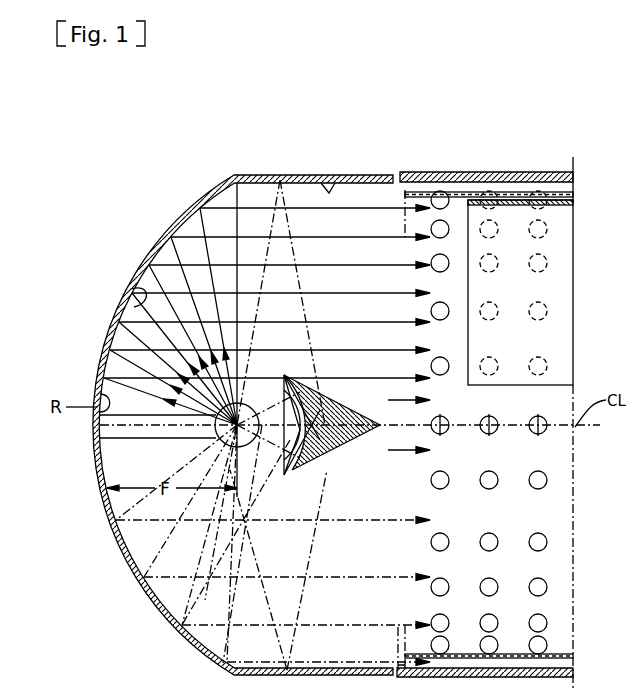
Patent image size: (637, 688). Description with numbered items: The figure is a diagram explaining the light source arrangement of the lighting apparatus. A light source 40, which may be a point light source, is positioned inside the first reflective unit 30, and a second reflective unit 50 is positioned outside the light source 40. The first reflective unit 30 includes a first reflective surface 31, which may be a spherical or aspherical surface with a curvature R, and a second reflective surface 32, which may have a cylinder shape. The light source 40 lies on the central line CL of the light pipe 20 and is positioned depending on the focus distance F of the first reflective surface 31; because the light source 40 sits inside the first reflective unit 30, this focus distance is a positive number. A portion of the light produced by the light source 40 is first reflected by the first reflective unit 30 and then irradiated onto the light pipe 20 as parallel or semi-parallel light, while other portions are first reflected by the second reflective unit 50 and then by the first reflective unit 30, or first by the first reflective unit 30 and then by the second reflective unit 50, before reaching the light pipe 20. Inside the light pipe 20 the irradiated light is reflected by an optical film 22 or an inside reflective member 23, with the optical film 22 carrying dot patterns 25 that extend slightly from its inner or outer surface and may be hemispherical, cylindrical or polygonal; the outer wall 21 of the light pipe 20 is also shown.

The light pipe 20 is at (582, 101).
The outer casing wall 21 is at (450, 172).
The optical film 22 is at (509, 192).
The inside reflective member 23 is at (527, 200).
The dot patterns 25 is at (546, 236).
The first reflective unit 30 is at (185, 212).
The first reflective surface 31 is at (134, 296).
The second reflective surface 32 is at (332, 180).
The light source 40 is at (222, 444).
The second reflective unit 50 is at (348, 442).